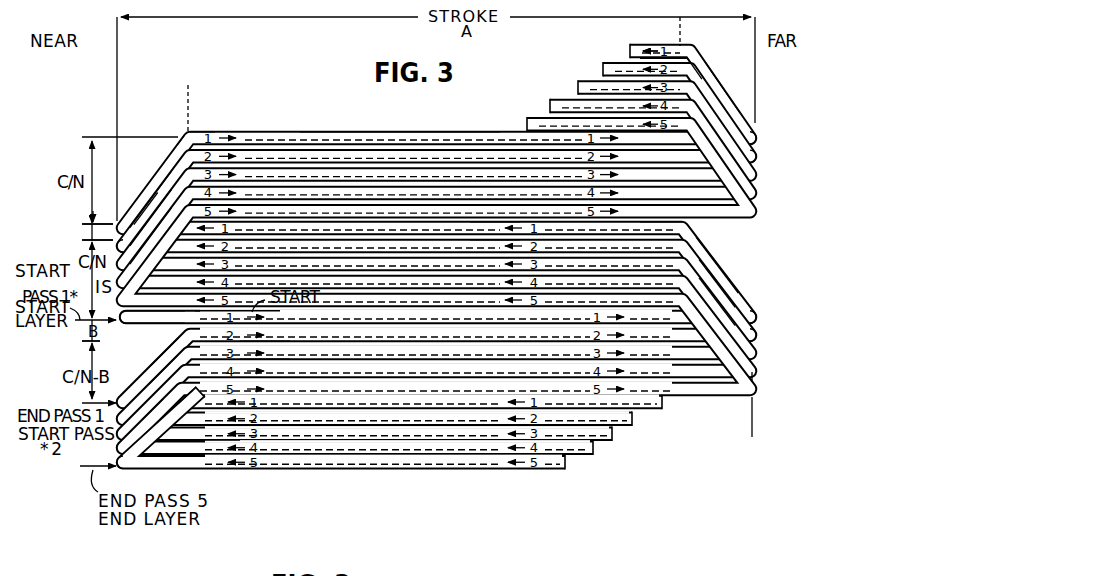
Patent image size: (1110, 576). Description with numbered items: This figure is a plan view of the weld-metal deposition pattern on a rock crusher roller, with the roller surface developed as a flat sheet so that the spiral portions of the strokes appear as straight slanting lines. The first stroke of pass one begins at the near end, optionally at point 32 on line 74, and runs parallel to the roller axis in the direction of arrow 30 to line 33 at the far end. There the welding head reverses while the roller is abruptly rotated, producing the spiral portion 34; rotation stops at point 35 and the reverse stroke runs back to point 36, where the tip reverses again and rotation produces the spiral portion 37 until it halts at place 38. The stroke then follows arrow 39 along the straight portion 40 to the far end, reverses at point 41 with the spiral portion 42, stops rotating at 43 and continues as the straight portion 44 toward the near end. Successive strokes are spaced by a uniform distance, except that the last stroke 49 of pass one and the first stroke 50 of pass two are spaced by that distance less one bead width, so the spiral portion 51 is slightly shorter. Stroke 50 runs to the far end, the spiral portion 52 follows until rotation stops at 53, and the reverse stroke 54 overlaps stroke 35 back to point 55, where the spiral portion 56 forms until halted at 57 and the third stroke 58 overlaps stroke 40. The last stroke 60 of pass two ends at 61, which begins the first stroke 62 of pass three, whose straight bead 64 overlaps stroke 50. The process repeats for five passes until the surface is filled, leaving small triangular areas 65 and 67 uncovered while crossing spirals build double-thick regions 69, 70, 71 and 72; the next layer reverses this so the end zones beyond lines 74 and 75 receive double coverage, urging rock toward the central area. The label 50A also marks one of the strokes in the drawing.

The first stroke of pass 1 30 is at (268, 316).
The starting point on line 74 32 is at (188, 313).
The far end line 33 is at (752, 420).
The spiral portion 34 is at (733, 271).
The second stroke of pass 1 35 is at (510, 226).
The point on line 31 36 is at (86, 221).
The spiral portion 37 is at (172, 206).
The rotation stop point 38 is at (183, 137).
The stroke direction arrow 39 is at (217, 136).
The straight stroke portion 40 is at (426, 136).
The far end reversal point 41 is at (753, 127).
The spiral portion 42 is at (720, 93).
The rotation stop point 43 is at (682, 51).
The straight line portion 44 is at (654, 49).
The last stroke of pass 1 49 is at (206, 403).
The first stroke of pass 2 50 is at (152, 362).
The third layer pass 50A is at (248, 333).
The spiral portion / far end point 51 is at (749, 326).
The spiral portion 52 is at (737, 291).
The rotation stop point 53 is at (680, 241).
The second stroke of pass 2 54 is at (508, 243).
The near end point 55 is at (121, 243).
The spiral portion 56 is at (140, 212).
The rotation stop point 57 is at (182, 163).
The third stroke of pass 2 58 is at (220, 159).
The last stroke of pass 2 60 is at (217, 437).
The end point of pass 2 61 is at (120, 445).
The first stroke of pass 3 62 is at (155, 384).
The first stroke of pass 3 (straight portion) 64 is at (253, 353).
The triangular uncovered area 65 is at (133, 338).
The triangular uncovered area 67 is at (735, 234).
The double thick region 69 is at (158, 452).
The double thick region 70 is at (172, 183).
The double thick region 71 is at (739, 346).
The double thick region 72 is at (749, 163).
The near rotation stop line 74 is at (190, 96).
The far rotation stop line 75 is at (682, 34).